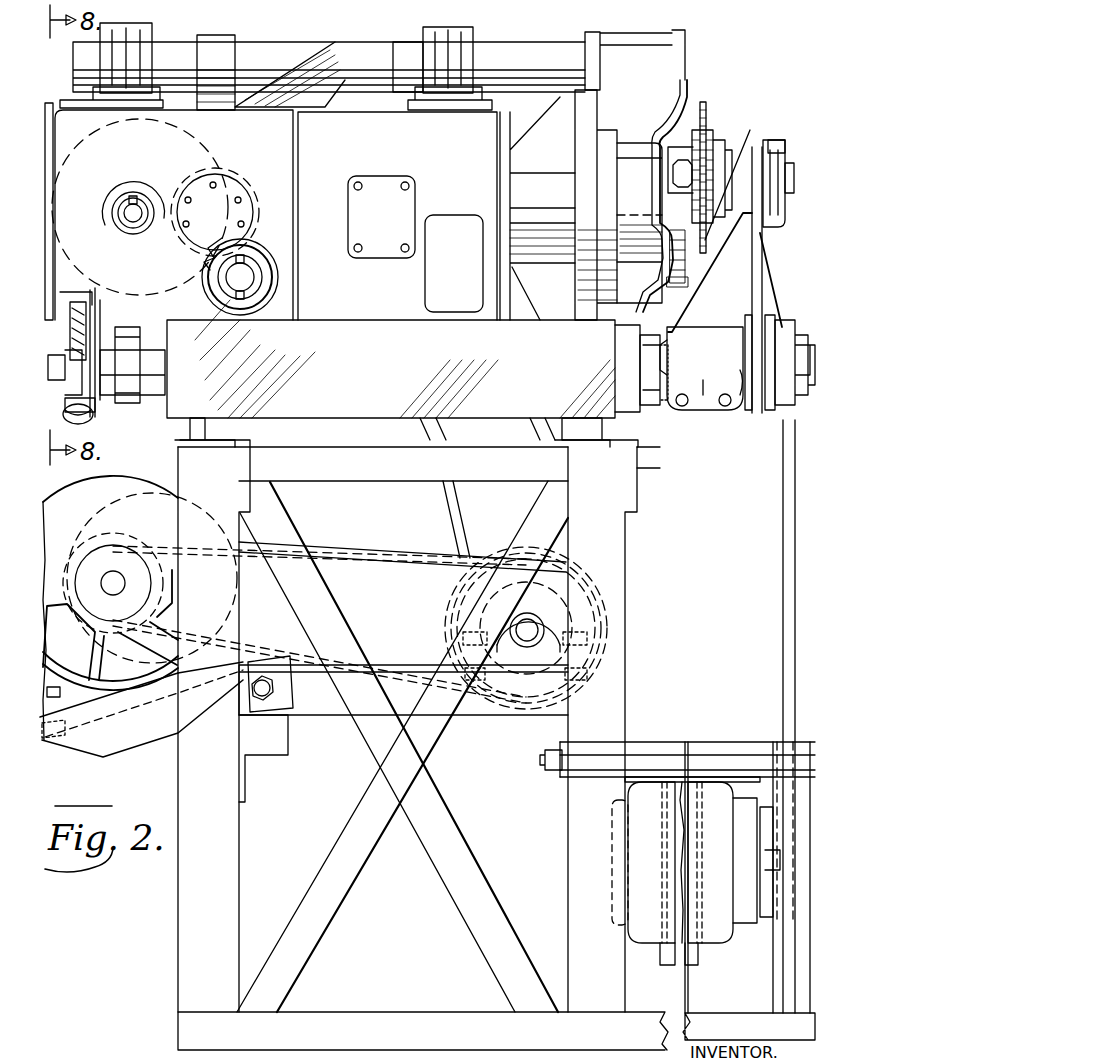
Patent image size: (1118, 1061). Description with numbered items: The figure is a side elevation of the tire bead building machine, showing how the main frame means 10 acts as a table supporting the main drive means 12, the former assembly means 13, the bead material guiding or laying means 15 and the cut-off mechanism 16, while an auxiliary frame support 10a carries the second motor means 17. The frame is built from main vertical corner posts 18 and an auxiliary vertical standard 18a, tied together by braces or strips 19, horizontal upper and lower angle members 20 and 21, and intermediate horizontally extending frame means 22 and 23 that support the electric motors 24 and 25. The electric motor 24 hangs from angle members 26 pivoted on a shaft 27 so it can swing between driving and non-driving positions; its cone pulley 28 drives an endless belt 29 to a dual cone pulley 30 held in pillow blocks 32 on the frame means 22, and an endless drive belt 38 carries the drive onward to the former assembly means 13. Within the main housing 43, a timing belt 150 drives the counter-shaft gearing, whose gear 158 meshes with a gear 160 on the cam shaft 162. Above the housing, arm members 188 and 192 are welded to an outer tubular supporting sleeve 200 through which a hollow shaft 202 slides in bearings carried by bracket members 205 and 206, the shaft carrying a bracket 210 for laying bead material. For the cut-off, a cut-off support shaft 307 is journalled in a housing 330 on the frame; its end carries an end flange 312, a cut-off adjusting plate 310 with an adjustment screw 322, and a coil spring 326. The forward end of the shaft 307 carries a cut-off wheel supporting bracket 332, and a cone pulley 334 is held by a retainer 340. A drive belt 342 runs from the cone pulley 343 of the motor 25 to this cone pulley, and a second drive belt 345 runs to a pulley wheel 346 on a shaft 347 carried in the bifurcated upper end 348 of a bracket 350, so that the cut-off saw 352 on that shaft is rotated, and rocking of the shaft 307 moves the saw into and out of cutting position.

The main frame means 10 is at (166, 946).
The auxiliary frame support 10a is at (734, 738).
The main drive means 12 is at (163, 480).
The former assembly means 13 is at (638, 137).
The bead material guiding or laying means 15 is at (696, 62).
The cut-off mechanism 16 is at (792, 240).
The second motor means 17 is at (718, 950).
The main vertical corner posts 18 is at (215, 860).
The auxiliary vertical standard 18a is at (785, 995).
The braces or strips 19 is at (362, 850).
The horizontal upper angle members 20 is at (249, 464).
The horizontal lower angle members 21 is at (414, 1020).
The intermediate horizontally extending frame means 22 is at (345, 715).
The intermediate horizontally extending frame means 23 is at (638, 748).
The electric motor 24 is at (110, 608).
The electric motor 25 is at (684, 873).
The angle members 26 is at (108, 748).
The shaft 27 is at (275, 692).
The cone pulley 28 is at (125, 548).
The endless belt 29 is at (360, 552).
The dual cone pulley 30 is at (498, 538).
The pillow blocks 32 is at (560, 640).
The endless drive belt 38 is at (455, 520).
The main housing 43 is at (331, 205).
The timing belt 150 is at (262, 278).
The gear 158 is at (260, 242).
The gear 160 is at (195, 140).
The cam shaft 162 is at (143, 205).
The arm member 188 is at (222, 45).
The arm member 192 is at (330, 60).
The outer tubular supporting sleeve 200 is at (285, 45).
The hollow shaft 202 is at (400, 45).
The bracket member 205 is at (142, 25).
The bracket member 206 is at (470, 25).
The bracket 210 is at (680, 48).
The cut-off support shaft 307 is at (128, 395).
The cut-off adjusting plate 310 is at (88, 375).
The end flange 312 is at (110, 360).
The adjustment screw 322 is at (85, 425).
The coil spring 326 is at (95, 310).
The housing 330 is at (403, 373).
The cut-off wheel supporting bracket 332 is at (703, 380).
The cone pulley 334 is at (760, 315).
The retainer 340 is at (795, 360).
The drive belt 342 is at (790, 478).
The cone pulley 343 is at (760, 918).
The second drive belt 345 is at (762, 278).
The pulley wheel 346 is at (780, 168).
The shaft 347 is at (783, 190).
The bifurcated upper end 348 is at (735, 140).
The bracket 350 is at (791, 146).
The cut-off saw 352 is at (710, 108).